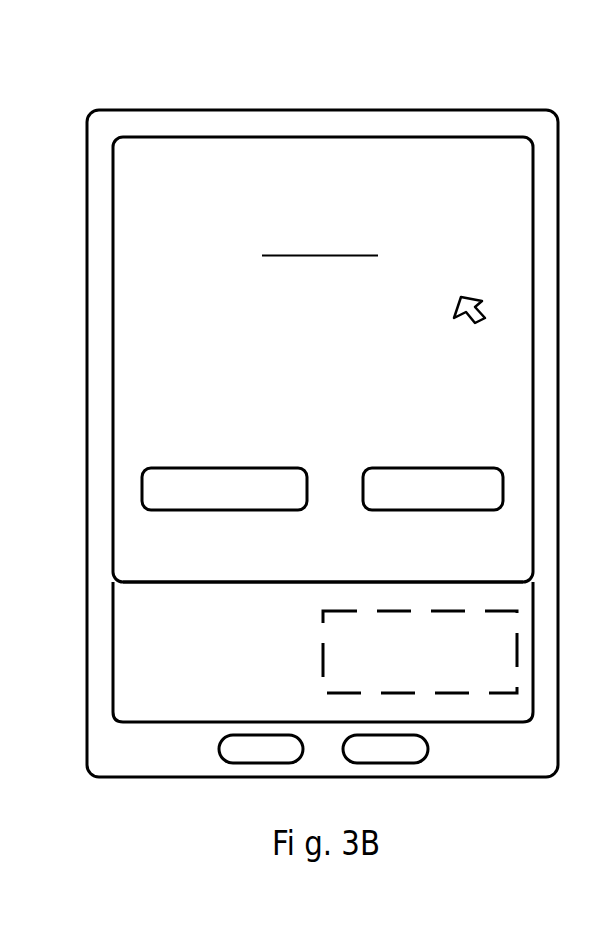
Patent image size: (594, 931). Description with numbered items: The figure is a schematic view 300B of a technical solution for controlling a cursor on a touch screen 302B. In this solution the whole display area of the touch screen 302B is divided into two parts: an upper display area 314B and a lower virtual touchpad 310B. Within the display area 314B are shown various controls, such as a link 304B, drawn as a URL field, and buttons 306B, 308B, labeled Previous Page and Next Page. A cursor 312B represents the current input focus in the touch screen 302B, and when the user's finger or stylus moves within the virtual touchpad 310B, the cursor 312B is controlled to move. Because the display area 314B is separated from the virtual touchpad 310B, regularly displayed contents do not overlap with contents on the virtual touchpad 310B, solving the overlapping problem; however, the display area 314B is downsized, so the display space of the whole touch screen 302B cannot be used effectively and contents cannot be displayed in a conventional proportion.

The schematic view 300B is at (250, 70).
The touch screen 302B is at (112, 191).
The link 304B is at (263, 223).
The button 306B is at (183, 462).
The button 308B is at (389, 462).
The virtual touchpad 310B is at (389, 678).
The cursor 312B is at (498, 346).
The display area 314B is at (389, 564).